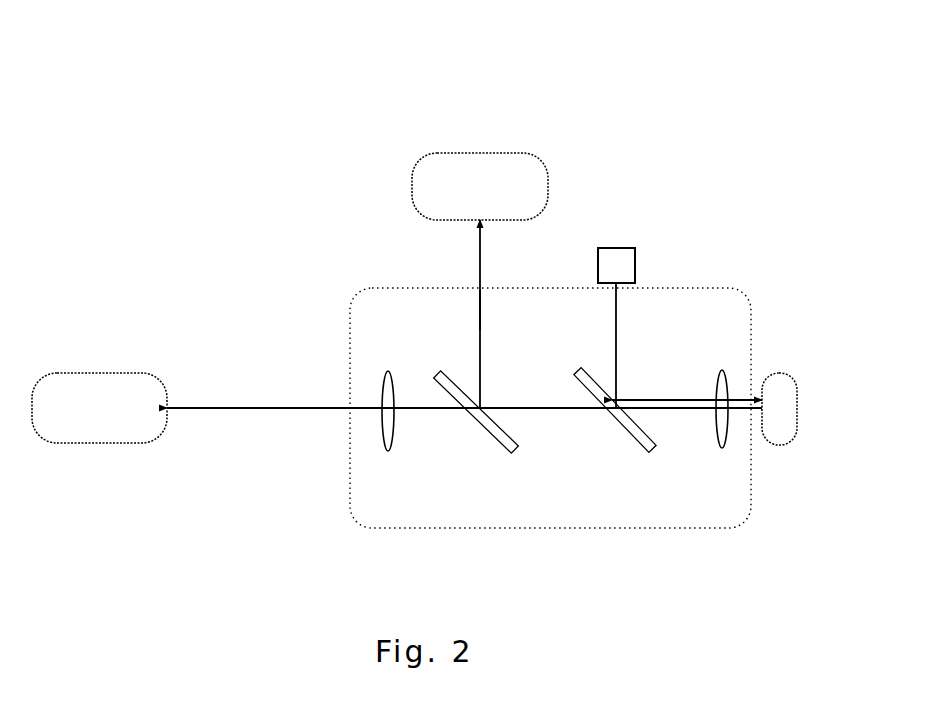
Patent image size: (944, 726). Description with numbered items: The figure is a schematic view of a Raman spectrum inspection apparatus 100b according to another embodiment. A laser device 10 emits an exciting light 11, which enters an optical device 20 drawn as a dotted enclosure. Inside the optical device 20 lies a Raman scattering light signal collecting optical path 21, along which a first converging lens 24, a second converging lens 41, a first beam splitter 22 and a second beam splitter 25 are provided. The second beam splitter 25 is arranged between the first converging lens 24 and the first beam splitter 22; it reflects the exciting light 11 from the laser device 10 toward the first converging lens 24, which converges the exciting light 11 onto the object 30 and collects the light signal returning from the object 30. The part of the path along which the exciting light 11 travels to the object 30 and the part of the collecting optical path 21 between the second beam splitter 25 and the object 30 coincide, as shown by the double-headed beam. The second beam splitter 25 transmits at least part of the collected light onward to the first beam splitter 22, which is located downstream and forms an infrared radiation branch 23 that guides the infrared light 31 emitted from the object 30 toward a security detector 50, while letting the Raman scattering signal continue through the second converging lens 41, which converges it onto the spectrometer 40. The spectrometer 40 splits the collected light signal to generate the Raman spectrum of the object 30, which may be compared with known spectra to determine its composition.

The Raman spectrum inspection apparatus 100b is at (491, 24).
The laser device 10 is at (618, 247).
The exciting light 11 is at (618, 345).
The optical device 20 is at (705, 500).
The Raman scattering light signal collecting optical path 21 is at (355, 415).
The first beam splitter 22 is at (490, 438).
The infrared radiation branch 23 is at (456, 311).
The first converging lens 24 is at (725, 370).
The second beam splitter 25 is at (620, 432).
The object 30 is at (797, 391).
The infrared light 31 is at (480, 328).
The spectrometer 40 is at (137, 375).
The second converging lens 41 is at (390, 374).
The security detector 50 is at (458, 152).